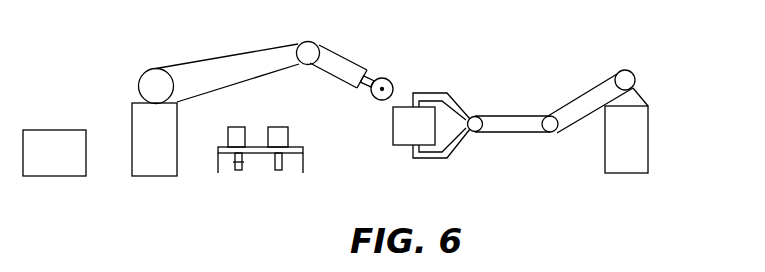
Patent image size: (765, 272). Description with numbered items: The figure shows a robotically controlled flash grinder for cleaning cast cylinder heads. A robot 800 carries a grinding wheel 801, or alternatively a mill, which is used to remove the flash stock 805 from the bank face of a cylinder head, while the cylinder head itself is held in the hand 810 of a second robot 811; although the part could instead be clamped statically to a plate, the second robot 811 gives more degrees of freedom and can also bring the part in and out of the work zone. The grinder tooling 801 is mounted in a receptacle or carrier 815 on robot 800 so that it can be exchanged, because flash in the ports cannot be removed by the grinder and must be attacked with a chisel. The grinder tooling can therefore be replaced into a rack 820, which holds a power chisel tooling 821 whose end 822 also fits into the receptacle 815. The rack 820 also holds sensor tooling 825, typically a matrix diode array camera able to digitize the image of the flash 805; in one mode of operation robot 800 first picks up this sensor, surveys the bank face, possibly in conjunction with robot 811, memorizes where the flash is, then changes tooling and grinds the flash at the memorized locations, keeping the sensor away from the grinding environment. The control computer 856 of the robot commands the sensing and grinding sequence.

The robot 800 is at (152, 68).
The receptacle or carrier 815 is at (343, 47).
The grinding wheel 801 is at (387, 77).
The flash stock 805 is at (390, 105).
The hand 810 is at (447, 93).
The second robot 811 is at (630, 71).
The control computer of the robot 856 is at (72, 158).
The rack 820 is at (218, 150).
The power chisel tooling 821 is at (237, 171).
The end of power chisel tooling 822 is at (238, 127).
The sensor tooling 825 is at (288, 130).